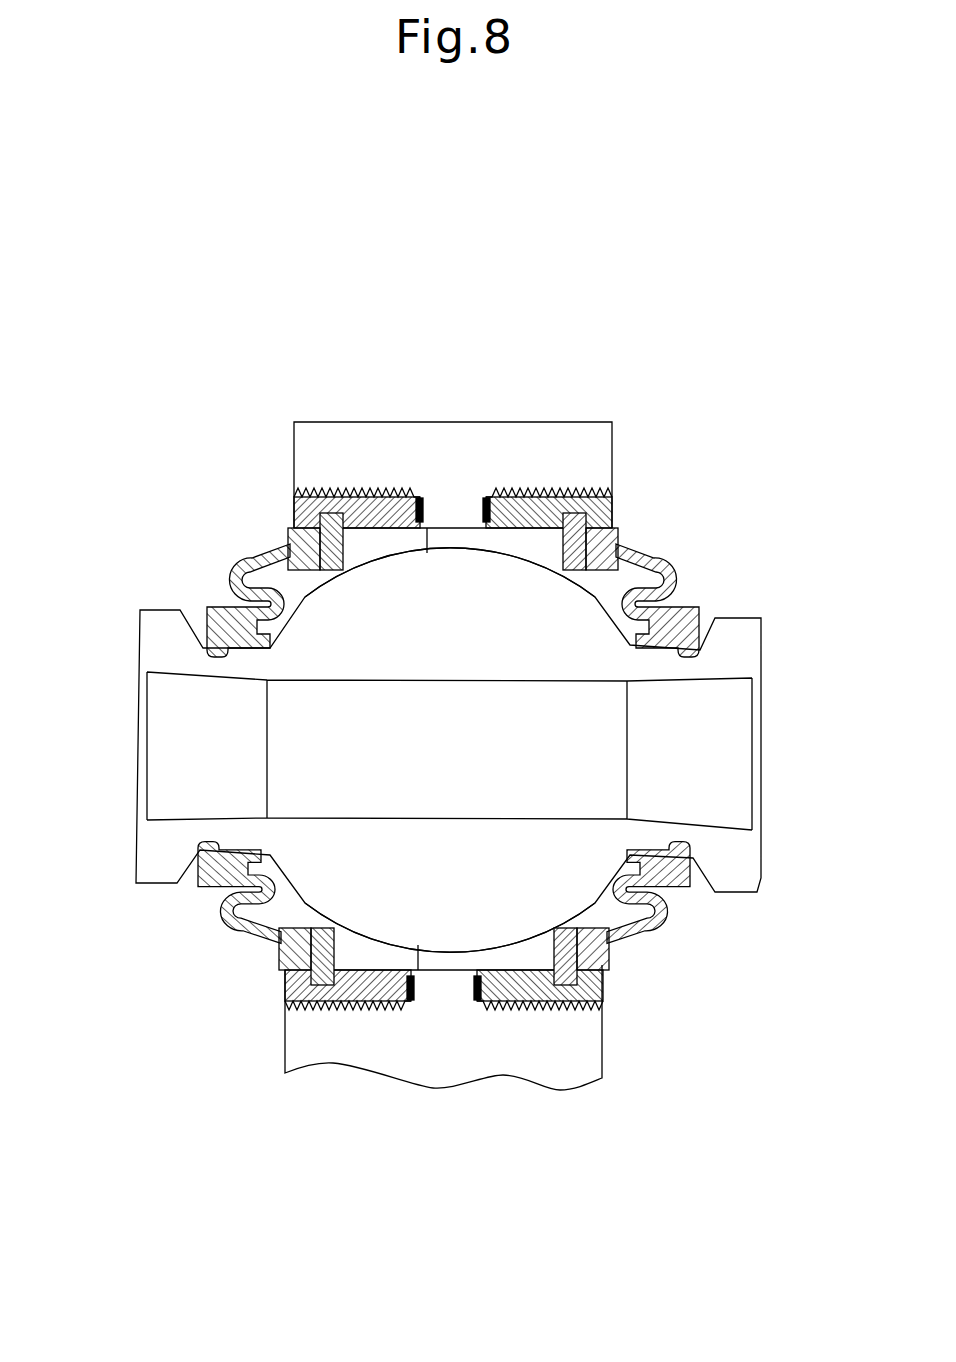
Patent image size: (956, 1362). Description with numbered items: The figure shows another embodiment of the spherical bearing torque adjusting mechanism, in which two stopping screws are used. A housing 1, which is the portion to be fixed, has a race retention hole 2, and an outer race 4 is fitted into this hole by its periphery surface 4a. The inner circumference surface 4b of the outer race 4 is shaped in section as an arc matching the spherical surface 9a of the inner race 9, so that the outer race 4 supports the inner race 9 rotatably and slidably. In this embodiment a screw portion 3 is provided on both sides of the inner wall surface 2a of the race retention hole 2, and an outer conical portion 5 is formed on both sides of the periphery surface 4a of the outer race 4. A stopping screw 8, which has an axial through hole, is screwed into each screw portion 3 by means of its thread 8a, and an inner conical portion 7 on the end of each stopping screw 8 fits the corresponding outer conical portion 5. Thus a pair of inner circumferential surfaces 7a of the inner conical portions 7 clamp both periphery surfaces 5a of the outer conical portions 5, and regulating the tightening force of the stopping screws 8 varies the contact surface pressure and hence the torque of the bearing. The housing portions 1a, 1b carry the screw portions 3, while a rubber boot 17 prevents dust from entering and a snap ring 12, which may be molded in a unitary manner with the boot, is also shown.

The housing 1 is at (450, 451).
The joint body portion 1a is at (605, 1050).
The joint body portion 1b is at (285, 1063).
The race retention hole 2 is at (477, 531).
The inner wall surface of the race retention hole 2a is at (428, 529).
The screw portion 3 is at (385, 492).
The outer race 4 is at (452, 528).
The periphery surface of the outer race 4a is at (447, 990).
The inner circumference surface of the outer race 4b is at (386, 560).
The outer conical portion 5 is at (340, 1015).
The periphery surface of the outer conical portion 5a is at (385, 1000).
The inner conical portion 7 is at (352, 966).
The inner circumferential surface of the inner conical portion 7a is at (386, 963).
The stopping screw 8 is at (309, 489).
The thread 8a is at (330, 490).
The inner race 9 is at (752, 655).
The spherical surface of the inner race 9a is at (307, 897).
The snap ring 12 is at (262, 554).
The rubber boot 17 is at (212, 916).